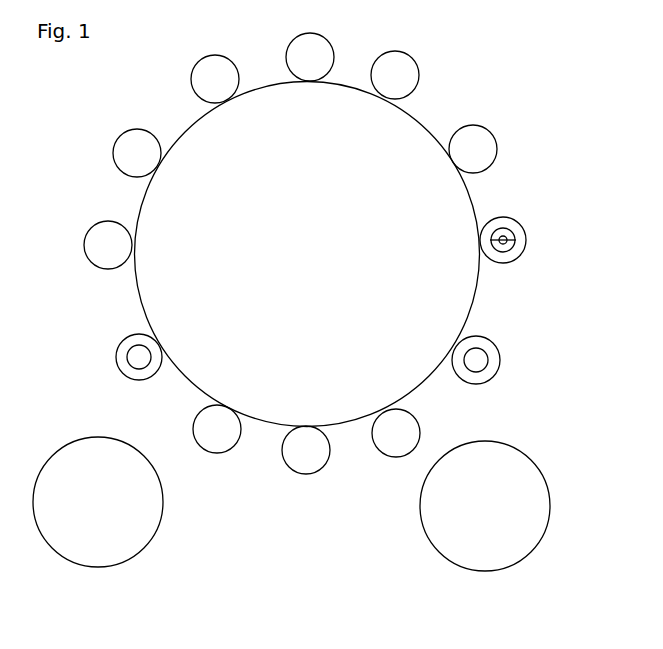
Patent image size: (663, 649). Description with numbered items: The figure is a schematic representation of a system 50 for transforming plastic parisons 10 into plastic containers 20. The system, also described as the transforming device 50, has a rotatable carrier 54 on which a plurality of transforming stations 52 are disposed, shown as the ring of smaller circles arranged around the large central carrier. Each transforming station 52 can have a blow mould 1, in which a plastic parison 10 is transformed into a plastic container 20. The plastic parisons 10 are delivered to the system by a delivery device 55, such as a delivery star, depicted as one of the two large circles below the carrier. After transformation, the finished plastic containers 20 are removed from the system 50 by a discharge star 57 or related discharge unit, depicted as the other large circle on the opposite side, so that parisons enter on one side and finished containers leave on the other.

The system 50 is at (106, 188).
The rotatable carrier 54 is at (455, 251).
The transforming station 52 is at (480, 140).
The blow mould 1 is at (503, 240).
The plastic parison 10 is at (476, 360).
The plastic container 20 is at (137, 357).
The delivery device 55 is at (483, 517).
The discharge star 57 is at (113, 533).